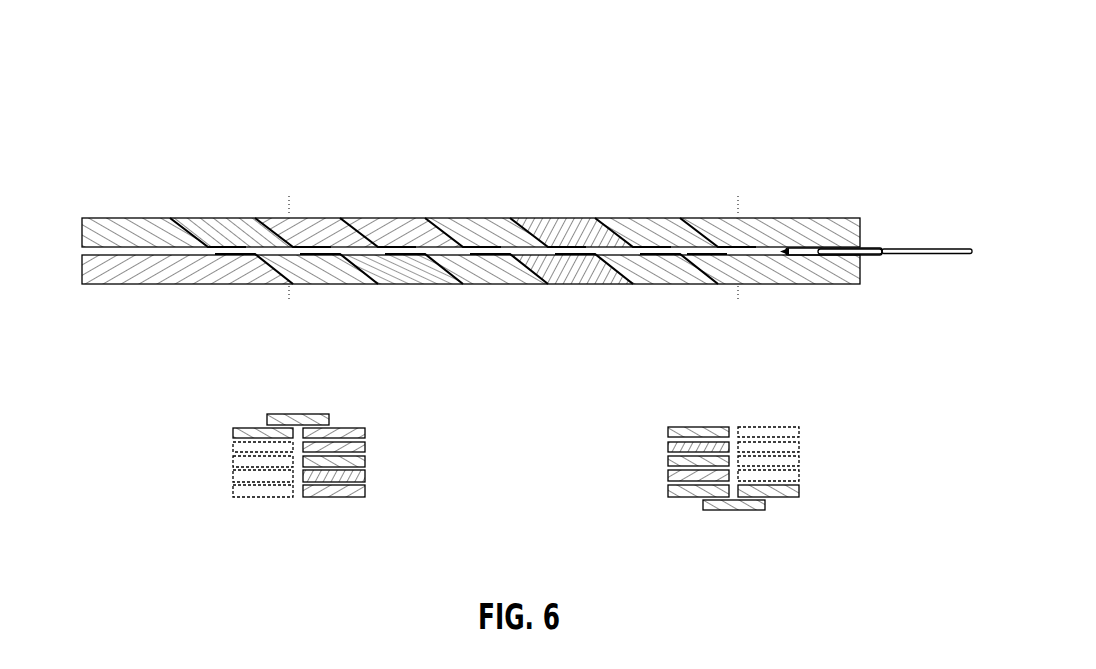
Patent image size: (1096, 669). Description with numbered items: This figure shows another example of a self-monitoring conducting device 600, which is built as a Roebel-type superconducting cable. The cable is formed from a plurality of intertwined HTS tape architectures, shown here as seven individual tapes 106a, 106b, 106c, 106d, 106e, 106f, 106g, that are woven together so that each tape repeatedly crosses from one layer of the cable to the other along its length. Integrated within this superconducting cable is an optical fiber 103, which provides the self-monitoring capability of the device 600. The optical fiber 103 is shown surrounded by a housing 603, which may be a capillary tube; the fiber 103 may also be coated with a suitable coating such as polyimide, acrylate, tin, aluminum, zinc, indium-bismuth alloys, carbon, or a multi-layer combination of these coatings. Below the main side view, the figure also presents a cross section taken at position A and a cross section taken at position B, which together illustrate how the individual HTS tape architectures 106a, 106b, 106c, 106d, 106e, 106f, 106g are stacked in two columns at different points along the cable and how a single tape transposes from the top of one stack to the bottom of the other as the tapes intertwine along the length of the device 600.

The self-monitoring conducting device 600 is at (259, 95).
The HTS tape architecture 106a is at (127, 232).
The HTS tape architecture 106b is at (216, 224).
The HTS tape architecture 106c is at (317, 226).
The HTS tape architecture 106d is at (393, 224).
The HTS tape architecture 106e is at (477, 226).
The HTS tape architecture 106f is at (560, 225).
The HTS tape architecture 106g is at (636, 228).
The housing 603 is at (868, 236).
The optical fiber 103 is at (950, 257).